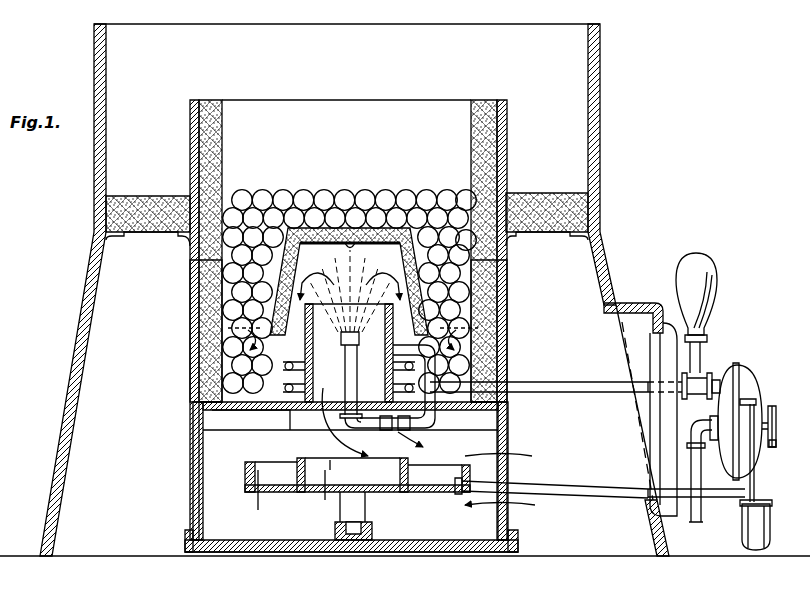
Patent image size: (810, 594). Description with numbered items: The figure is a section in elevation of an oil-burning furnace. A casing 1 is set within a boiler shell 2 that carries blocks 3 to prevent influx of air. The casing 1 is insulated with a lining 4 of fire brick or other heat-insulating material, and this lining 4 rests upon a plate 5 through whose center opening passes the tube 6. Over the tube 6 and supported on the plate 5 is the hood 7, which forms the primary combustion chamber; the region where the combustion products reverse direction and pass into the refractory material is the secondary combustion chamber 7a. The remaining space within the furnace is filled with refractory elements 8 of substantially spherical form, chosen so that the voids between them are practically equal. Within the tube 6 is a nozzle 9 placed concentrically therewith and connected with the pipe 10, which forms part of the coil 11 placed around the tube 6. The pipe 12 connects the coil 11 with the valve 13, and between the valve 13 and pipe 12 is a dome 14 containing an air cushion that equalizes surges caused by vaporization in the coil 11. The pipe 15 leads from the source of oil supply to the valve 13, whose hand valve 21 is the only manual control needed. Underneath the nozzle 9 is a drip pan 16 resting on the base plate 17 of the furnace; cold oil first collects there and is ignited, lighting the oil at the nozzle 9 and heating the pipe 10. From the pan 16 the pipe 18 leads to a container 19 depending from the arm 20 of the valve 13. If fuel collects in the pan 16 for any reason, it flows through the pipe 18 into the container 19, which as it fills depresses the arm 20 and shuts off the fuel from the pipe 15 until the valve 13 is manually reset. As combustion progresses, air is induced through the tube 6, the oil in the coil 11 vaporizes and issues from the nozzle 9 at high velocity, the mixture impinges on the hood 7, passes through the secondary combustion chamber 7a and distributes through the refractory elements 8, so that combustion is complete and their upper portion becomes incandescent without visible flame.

The casing 1 is at (506, 157).
The boiler shell 2 is at (600, 93).
The blocks 3 is at (540, 195).
The lining 4 is at (488, 101).
The plate 5 is at (232, 418).
The tube 6 is at (314, 380).
The hood 7 is at (370, 243).
The secondary combustion chamber 7a is at (200, 300).
The refractory elements 8 is at (300, 198).
The nozzle 9 is at (352, 378).
The pipe 10 is at (424, 436).
The coil 11 is at (310, 410).
The pipe 12 is at (540, 386).
The valve 13 is at (745, 382).
The dome 14 is at (694, 270).
The pipe 15 is at (698, 524).
The drip pan 16 is at (305, 494).
The base plate 17 is at (325, 553).
The pipe 18 is at (584, 497).
The container 19 is at (755, 535).
The arm 20 is at (751, 400).
The hand valve 21 is at (774, 443).